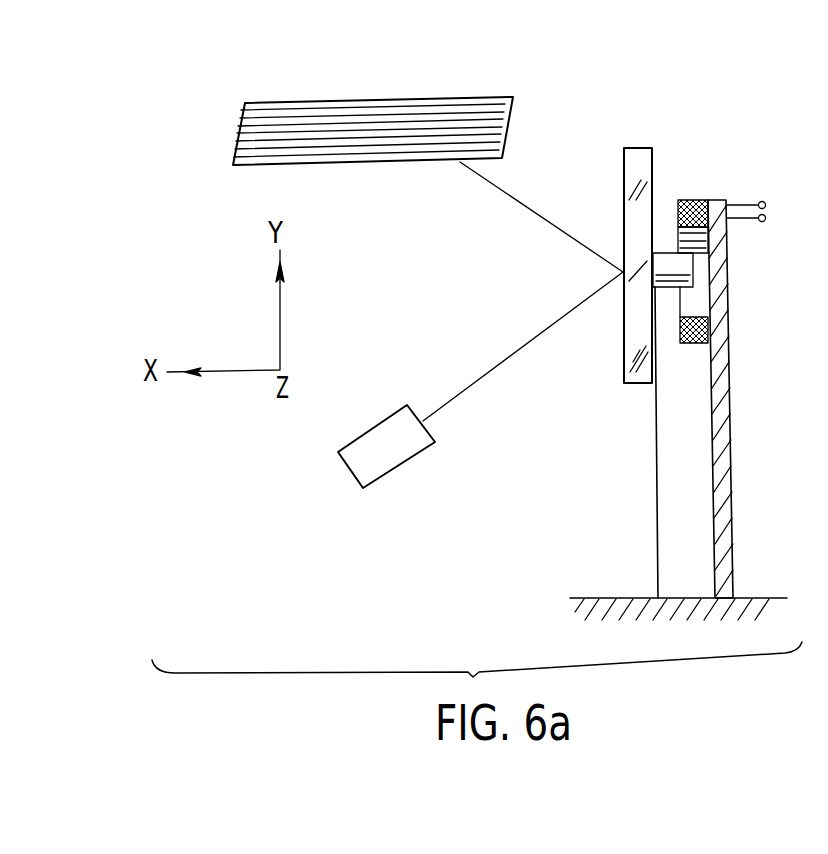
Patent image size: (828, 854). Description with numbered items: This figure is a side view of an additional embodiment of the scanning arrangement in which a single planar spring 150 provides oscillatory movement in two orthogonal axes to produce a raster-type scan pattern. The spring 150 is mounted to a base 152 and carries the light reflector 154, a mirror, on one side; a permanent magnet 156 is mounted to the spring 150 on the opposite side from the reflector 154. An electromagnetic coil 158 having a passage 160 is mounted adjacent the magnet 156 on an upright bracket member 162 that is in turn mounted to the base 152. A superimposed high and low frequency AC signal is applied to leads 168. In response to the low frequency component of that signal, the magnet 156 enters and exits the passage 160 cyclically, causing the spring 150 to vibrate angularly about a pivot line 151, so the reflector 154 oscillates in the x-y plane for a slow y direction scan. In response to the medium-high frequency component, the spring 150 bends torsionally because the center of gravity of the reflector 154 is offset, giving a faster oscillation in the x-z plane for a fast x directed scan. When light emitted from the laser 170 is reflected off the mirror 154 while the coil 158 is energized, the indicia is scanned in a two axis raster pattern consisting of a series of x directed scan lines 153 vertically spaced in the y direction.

The planar spring 150 is at (657, 500).
The pivot line 151 is at (657, 596).
The base 152 is at (770, 598).
The scan lines 153 is at (423, 97).
The light reflector 154 is at (623, 183).
The magnet 156 is at (662, 252).
The electromagnetic coil 158 is at (695, 199).
The passage 160 is at (690, 300).
The upright bracket member 162 is at (733, 480).
The leads 168 is at (776, 193).
The laser 170 is at (406, 462).